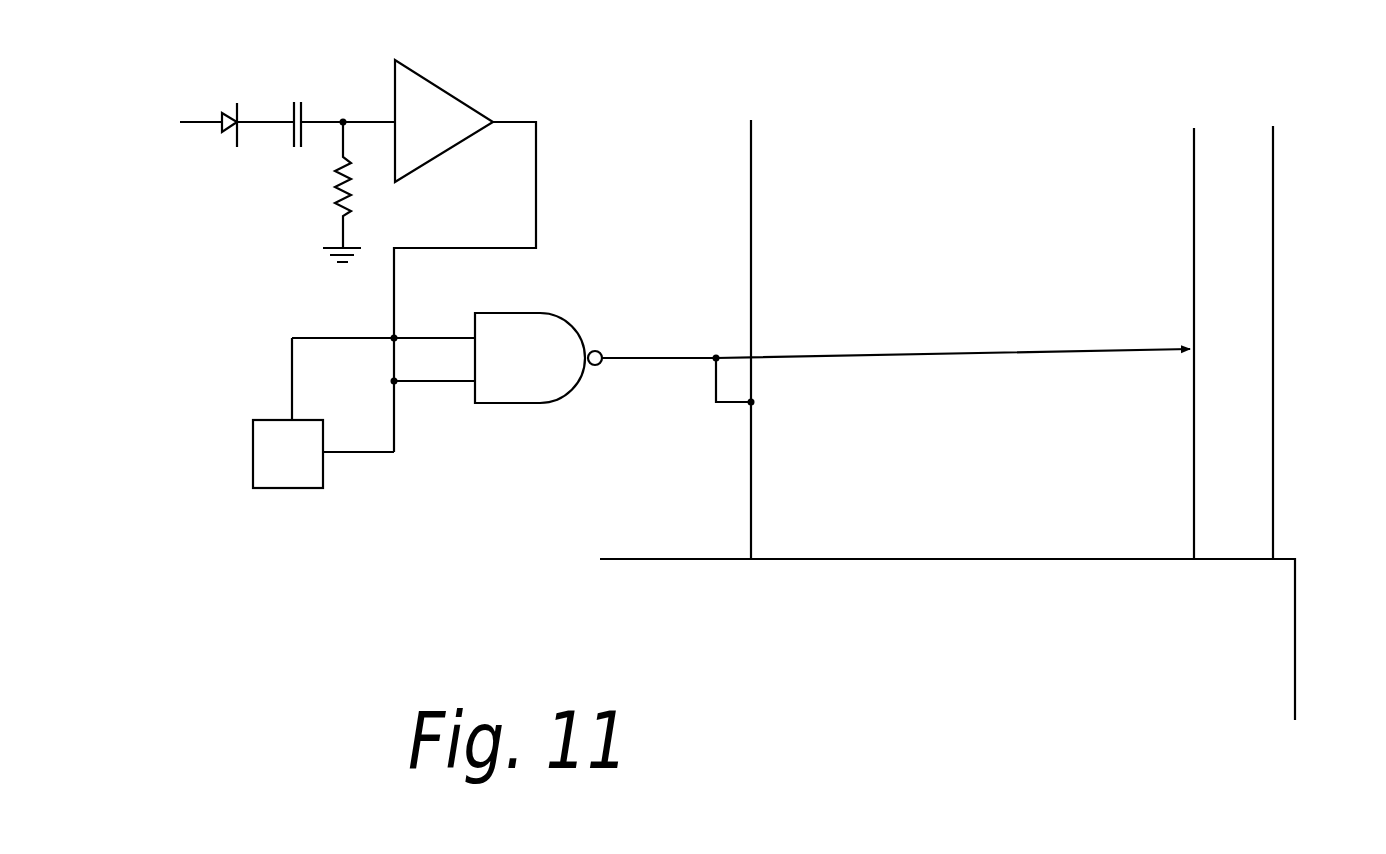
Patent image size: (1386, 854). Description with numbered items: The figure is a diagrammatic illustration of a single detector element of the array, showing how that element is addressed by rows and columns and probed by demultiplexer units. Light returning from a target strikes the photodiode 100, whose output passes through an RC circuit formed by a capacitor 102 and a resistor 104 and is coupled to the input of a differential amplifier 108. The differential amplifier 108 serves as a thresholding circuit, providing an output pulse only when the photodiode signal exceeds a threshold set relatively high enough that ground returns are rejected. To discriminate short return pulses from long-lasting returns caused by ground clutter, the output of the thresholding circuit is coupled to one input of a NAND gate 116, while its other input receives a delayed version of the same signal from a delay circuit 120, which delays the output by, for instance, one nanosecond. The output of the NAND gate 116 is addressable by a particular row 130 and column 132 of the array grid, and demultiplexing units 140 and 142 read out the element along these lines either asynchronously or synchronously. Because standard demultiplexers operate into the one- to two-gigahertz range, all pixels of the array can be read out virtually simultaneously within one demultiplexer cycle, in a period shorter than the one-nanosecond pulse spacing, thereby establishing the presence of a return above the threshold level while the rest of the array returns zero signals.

The photodiode 100 is at (220, 138).
The RC circuit 102 is at (293, 101).
The RC circuit 104 is at (336, 177).
The differential amplifier 108 is at (453, 94).
The NAND gate 116 is at (539, 313).
The delay circuit 120 is at (286, 488).
The row 130 is at (868, 468).
The column 132 is at (905, 350).
The demultiplexing unit 140 is at (938, 617).
The demultiplexing unit 142 is at (1237, 237).